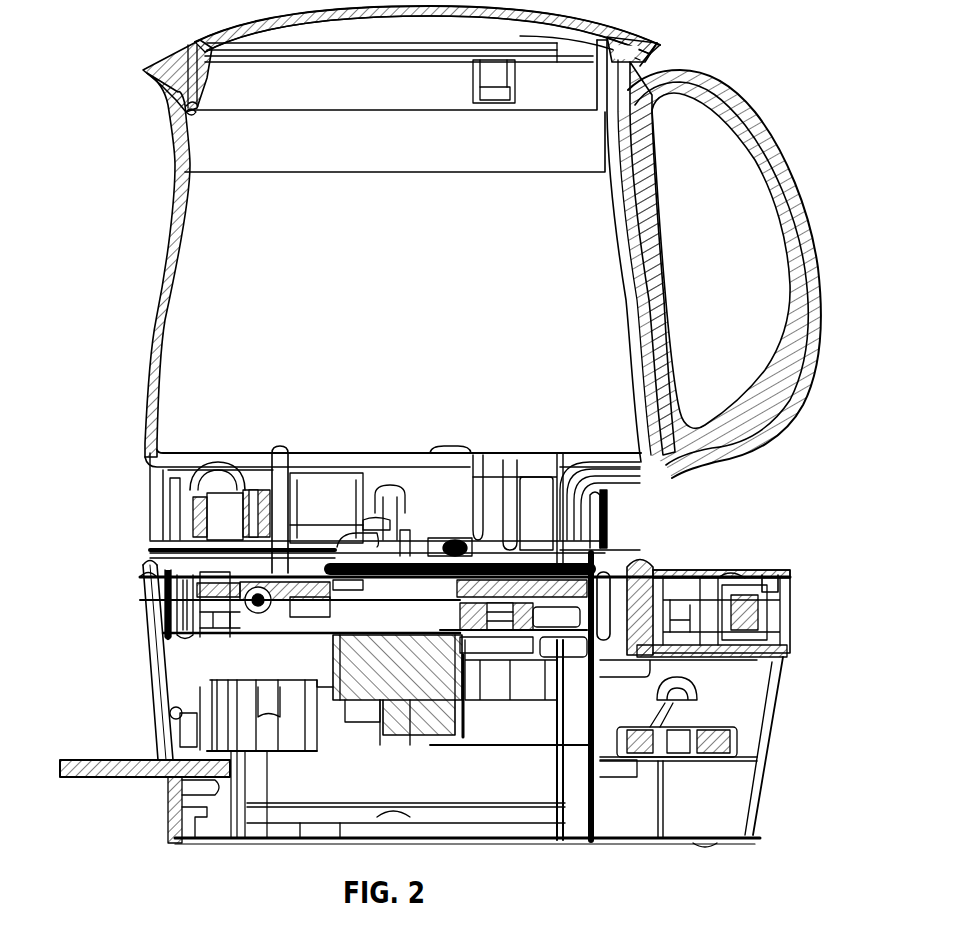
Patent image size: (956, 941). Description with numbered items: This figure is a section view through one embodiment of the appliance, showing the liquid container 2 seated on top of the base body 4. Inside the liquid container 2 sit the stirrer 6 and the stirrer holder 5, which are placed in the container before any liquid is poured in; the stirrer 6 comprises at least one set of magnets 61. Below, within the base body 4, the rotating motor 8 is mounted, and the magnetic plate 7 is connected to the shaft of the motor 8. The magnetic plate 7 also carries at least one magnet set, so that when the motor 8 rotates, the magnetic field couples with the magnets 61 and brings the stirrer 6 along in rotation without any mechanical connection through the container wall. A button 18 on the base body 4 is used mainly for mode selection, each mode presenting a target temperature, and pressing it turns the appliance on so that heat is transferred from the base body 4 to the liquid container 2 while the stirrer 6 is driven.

The liquid container 2 is at (168, 170).
The base body 4 is at (157, 730).
The stirrer holder 5 is at (306, 486).
The stirrer 6 is at (160, 554).
The magnetic plate 7 is at (163, 614).
The rotating motor 8 is at (362, 660).
The button 18 is at (745, 567).
The magnet 61 is at (433, 540).